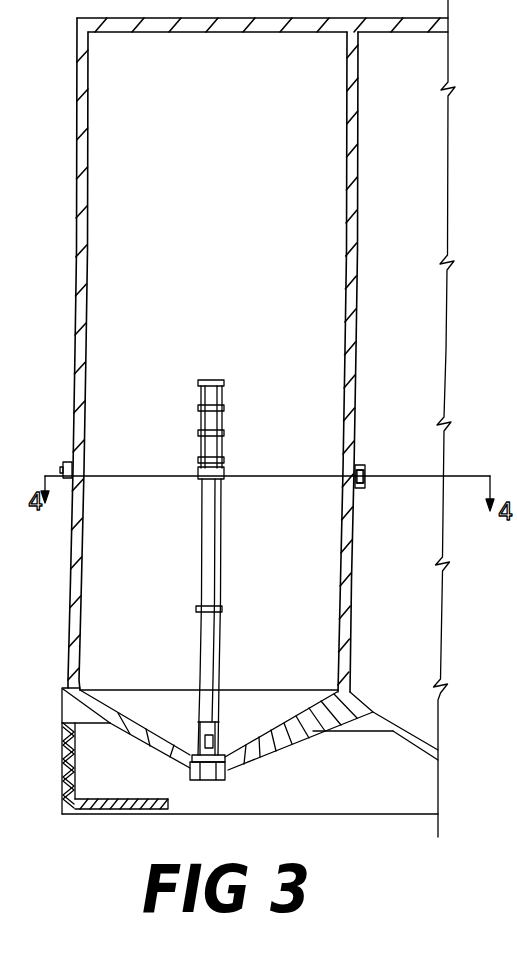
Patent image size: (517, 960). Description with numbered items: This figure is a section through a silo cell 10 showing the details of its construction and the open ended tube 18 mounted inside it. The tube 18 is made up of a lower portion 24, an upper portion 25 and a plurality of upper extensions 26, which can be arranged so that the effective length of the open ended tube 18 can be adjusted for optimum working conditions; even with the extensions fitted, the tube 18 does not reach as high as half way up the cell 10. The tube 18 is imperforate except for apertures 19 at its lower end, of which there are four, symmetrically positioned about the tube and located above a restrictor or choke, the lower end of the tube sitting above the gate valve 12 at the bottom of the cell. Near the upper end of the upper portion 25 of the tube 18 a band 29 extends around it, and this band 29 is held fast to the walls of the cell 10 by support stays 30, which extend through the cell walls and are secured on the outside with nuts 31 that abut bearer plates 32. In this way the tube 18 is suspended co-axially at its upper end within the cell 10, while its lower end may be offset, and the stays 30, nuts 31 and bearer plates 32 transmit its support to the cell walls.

The cell 10 is at (362, 176).
The gate valve 12 is at (250, 748).
The open ended tube 18 is at (236, 567).
The apertures 19 is at (215, 736).
The lower portion 24 is at (212, 667).
The upper portion 25 is at (222, 511).
The upper extensions 26 is at (224, 402).
The band 29 is at (223, 470).
The support stays 30 is at (290, 476).
The nuts 31 is at (361, 468).
The bearer plates 32 is at (66, 481).